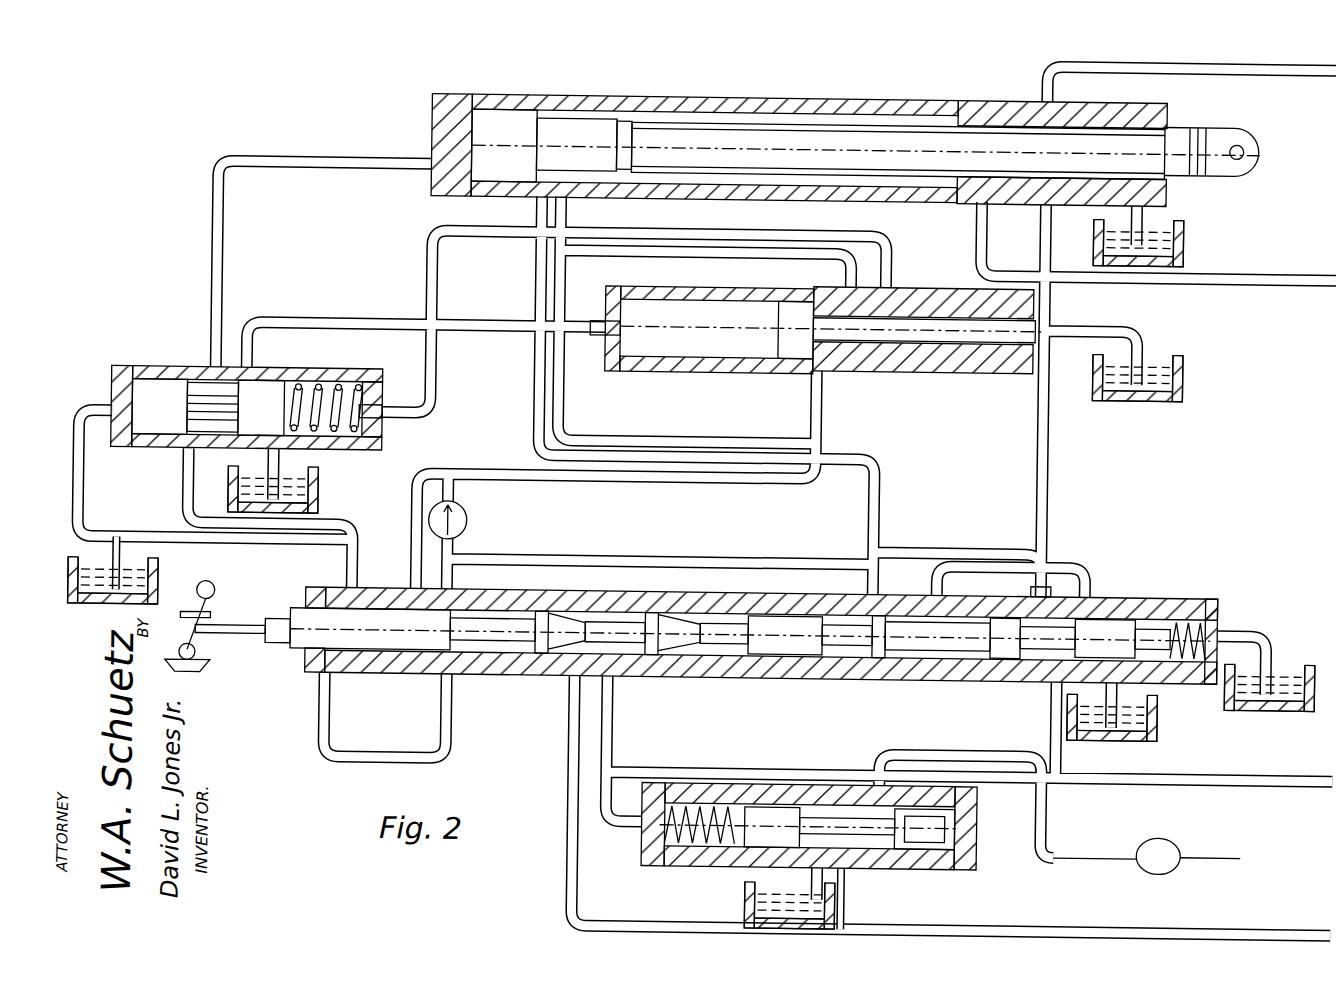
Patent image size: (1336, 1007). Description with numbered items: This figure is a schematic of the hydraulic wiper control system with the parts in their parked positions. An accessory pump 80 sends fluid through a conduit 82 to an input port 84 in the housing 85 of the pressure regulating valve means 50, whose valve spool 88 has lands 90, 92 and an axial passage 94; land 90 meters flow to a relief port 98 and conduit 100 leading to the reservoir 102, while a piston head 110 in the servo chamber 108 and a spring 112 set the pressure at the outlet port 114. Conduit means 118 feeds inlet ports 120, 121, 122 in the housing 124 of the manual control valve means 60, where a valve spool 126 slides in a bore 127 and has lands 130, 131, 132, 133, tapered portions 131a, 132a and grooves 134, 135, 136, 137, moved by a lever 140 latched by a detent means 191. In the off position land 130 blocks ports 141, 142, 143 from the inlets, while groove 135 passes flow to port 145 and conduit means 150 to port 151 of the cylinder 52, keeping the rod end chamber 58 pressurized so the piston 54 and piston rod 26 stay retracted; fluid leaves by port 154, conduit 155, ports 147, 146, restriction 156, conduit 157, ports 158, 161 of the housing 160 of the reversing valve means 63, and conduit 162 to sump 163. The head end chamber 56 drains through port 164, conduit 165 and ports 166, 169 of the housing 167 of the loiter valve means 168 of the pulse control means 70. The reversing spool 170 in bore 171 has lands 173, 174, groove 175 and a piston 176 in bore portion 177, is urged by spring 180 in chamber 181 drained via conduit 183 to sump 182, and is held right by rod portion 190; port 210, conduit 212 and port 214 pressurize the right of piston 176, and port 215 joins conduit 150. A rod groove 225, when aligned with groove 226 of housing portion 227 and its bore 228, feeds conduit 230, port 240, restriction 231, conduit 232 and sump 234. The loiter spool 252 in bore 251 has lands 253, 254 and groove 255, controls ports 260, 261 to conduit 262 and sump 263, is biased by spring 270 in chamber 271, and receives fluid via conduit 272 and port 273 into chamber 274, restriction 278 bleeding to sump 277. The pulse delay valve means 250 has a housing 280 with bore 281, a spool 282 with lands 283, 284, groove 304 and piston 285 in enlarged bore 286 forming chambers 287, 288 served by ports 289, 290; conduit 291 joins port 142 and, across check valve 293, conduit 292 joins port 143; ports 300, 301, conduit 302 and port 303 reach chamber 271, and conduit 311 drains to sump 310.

The piston rod 26 is at (765, 123).
The pressure regulating valve means 50 is at (986, 871).
The cylinder 52 is at (900, 97).
The piston 54 is at (510, 120).
The head end chamber 56 is at (483, 97).
The rod end chamber 58 is at (838, 97).
The manual control valve means 60 is at (290, 605).
The bypass passage 63 is at (993, 585).
The pulse control means 70 is at (633, 383).
The accessory pump 80 is at (1174, 835).
The conduit 82 is at (1104, 857).
The input port 84 is at (876, 790).
The housing 85 is at (974, 820).
The valve spool 88 is at (934, 858).
The land 90 is at (782, 806).
The land 92 is at (924, 858).
The axial passage 94 is at (929, 807).
The pressure relief port 98 is at (813, 860).
The conduit 100 is at (752, 904).
The reservoir 102 is at (851, 898).
The servo chamber 108 is at (664, 846).
The piston head 110 is at (709, 806).
The compression spring 112 is at (704, 843).
The outlet port 114 is at (852, 868).
The conduit means 118 is at (1288, 68).
The inlet port 120 is at (323, 677).
The inlet port 121 is at (423, 677).
The inlet port 122 is at (574, 684).
The housing 124 is at (307, 650).
The valve spool 126 is at (791, 620).
The cylindrical bore 127 is at (739, 620).
The land 130 is at (313, 616).
The land 131 is at (545, 613).
The linearly tapered portion 131a is at (569, 622).
The land 132 is at (681, 620).
The linearly tapered portion 132a is at (701, 600).
The land 133 is at (769, 655).
The groove 134 is at (498, 645).
The groove 135 is at (692, 655).
The groove 136 is at (727, 655).
The groove 137 is at (823, 655).
The manually operable lever 140 is at (202, 668).
The outlet port 141 is at (349, 592).
The port 142 is at (410, 603).
The port 143 is at (463, 605).
The outlet port 145 is at (612, 684).
The port 146 is at (833, 600).
The port 147 is at (889, 605).
The conduit means 150 is at (1335, 410).
The inlet port 151 is at (955, 201).
The outlet port 154 is at (533, 201).
The conduit 155 is at (535, 330).
The restriction 156 is at (821, 592).
The conduit 157 is at (598, 558).
The port 158 is at (1089, 588).
The housing 160 is at (1141, 592).
The port 161 is at (1175, 677).
The conduit 162 is at (1121, 706).
The sump 163 is at (1133, 740).
The port 164 is at (435, 163).
The conduit 165 is at (296, 162).
The port 166 is at (208, 389).
The housing 167 is at (138, 381).
The loiter valve means 168 is at (117, 364).
The port 169 is at (165, 446).
The valve spool 170 is at (924, 649).
The bore 171 is at (883, 655).
The first land 173 is at (1042, 646).
The second land 174 is at (1154, 622).
The annular groove 175 is at (1113, 617).
The piston portion 176 is at (1010, 655).
The enlarged diameter bore portion 177 is at (959, 677).
The compression spring 180 is at (1202, 628).
The chamber 181 is at (1214, 598).
The sump 182 is at (1288, 704).
The conduit 183 is at (1274, 643).
The rod portion 190 is at (878, 655).
The releasable detent means 191 is at (217, 632).
The port 210 is at (562, 201).
The conduit 212 is at (630, 448).
The port 214 is at (1048, 588).
The port 215 is at (1055, 684).
The annular groove 225 is at (623, 124).
The annular groove 226 is at (1036, 96).
The housing portion 227 is at (1135, 106).
The internal bore 228 is at (1175, 124).
The conduit 230 is at (1049, 449).
The restriction 231 is at (1078, 218).
The conduit 232 is at (1146, 211).
The sump 234 is at (1180, 255).
The port 240 is at (941, 553).
The pulse delay valve means 250 is at (837, 384).
The cylindrical bore 251 is at (330, 393).
The valve spool 252 is at (150, 456).
The land 253 is at (158, 396).
The land 254 is at (290, 399).
The annular groove 255 is at (219, 366).
The port 260 is at (254, 401).
The port 261 is at (280, 451).
The conduit 262 is at (200, 456).
The sump 263 is at (318, 502).
The compression spring 270 is at (373, 412).
The chamber 271 is at (348, 438).
The conduit 272 is at (100, 541).
The port 273 is at (116, 414).
The chamber 274 is at (128, 446).
The sump 277 is at (159, 596).
The restriction 278 is at (126, 551).
The housing 280 is at (697, 292).
The cylindrical bore 281 is at (947, 289).
The valve spool 282 is at (939, 341).
The land 283 is at (879, 348).
The land 284 is at (979, 350).
The piston portion 285 is at (792, 300).
The larger diameter bore portion 286 is at (637, 300).
The head end chamber 287 is at (692, 362).
The rod end chamber 288 is at (828, 300).
The port 289 is at (618, 329).
The port 290 is at (813, 357).
The conduit 291 is at (632, 479).
The conduit 292 is at (456, 555).
The one-way check valve 293 is at (467, 513).
The port 300 is at (848, 287).
The port 301 is at (889, 297).
The conduit 302 is at (762, 230).
The port 303 is at (395, 428).
The annular groove 304 is at (899, 350).
The sump 310 is at (1181, 384).
The conduit 311 is at (1116, 329).